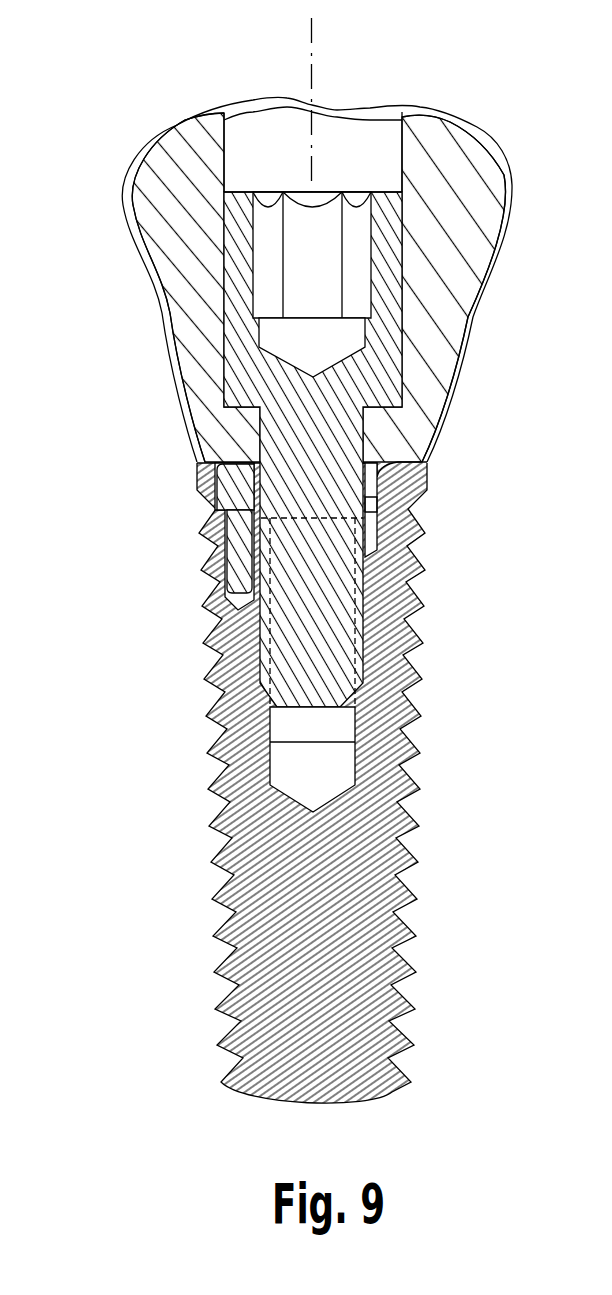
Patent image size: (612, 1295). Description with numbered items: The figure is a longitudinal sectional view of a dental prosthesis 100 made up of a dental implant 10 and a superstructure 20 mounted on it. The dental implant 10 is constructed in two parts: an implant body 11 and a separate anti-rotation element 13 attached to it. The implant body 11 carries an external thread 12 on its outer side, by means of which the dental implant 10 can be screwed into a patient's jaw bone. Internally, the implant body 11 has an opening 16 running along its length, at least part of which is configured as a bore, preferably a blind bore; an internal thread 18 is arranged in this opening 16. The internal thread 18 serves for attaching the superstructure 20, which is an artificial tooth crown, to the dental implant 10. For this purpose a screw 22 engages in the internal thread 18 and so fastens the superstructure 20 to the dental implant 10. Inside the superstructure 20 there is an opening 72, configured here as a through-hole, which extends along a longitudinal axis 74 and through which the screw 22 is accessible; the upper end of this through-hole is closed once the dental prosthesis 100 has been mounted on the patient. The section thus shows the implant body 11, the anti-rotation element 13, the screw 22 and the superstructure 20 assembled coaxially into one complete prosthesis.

The dental prosthesis 100 is at (104, 116).
The dental implant 10 is at (313, 782).
The implant body 11 is at (247, 873).
The external thread 12 is at (210, 780).
The anti-rotation element 13 is at (208, 486).
The opening 16 is at (297, 775).
The internal thread 18 is at (363, 710).
The superstructure 20 is at (443, 373).
The screw 22 is at (383, 330).
The opening 72 is at (344, 170).
The longitudinal axis 74 is at (313, 35).